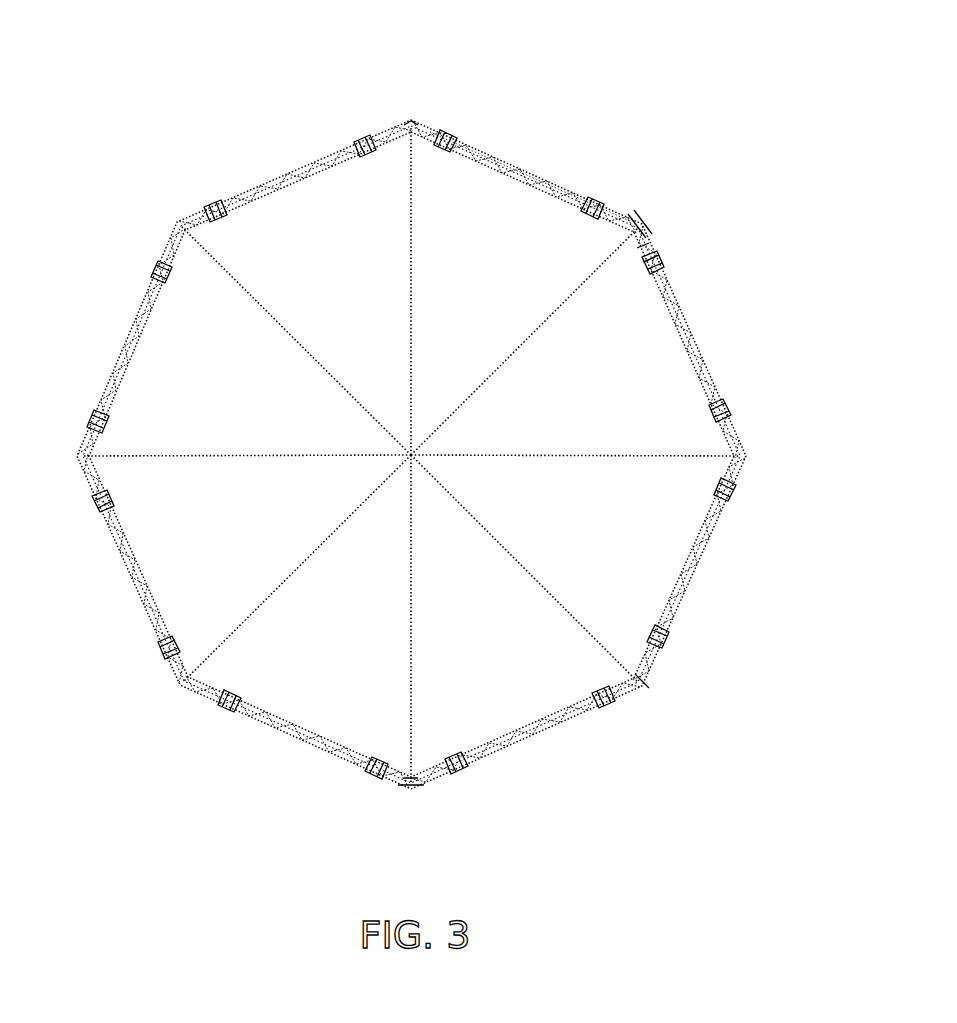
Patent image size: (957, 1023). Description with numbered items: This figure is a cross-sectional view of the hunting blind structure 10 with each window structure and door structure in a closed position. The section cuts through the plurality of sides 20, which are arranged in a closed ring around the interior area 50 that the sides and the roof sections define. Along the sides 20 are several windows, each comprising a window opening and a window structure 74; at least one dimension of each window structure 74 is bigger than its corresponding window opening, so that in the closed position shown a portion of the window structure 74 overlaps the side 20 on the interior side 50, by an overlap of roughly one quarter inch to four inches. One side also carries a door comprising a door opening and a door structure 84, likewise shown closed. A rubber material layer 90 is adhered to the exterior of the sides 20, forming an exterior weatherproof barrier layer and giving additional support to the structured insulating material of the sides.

The hunting blind structure 10 is at (412, 447).
The sides 20 is at (620, 210).
The interior area 50 is at (500, 439).
The window structure 74 is at (298, 184).
The door structure 84 is at (540, 180).
The rubber material layer 90 is at (397, 130).